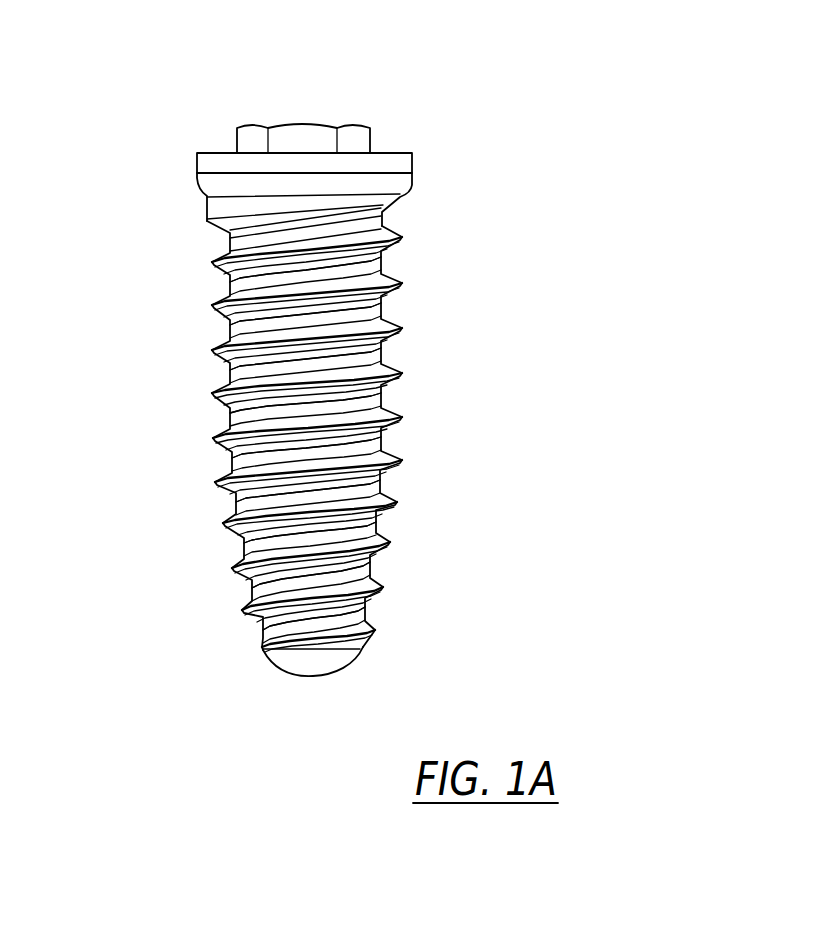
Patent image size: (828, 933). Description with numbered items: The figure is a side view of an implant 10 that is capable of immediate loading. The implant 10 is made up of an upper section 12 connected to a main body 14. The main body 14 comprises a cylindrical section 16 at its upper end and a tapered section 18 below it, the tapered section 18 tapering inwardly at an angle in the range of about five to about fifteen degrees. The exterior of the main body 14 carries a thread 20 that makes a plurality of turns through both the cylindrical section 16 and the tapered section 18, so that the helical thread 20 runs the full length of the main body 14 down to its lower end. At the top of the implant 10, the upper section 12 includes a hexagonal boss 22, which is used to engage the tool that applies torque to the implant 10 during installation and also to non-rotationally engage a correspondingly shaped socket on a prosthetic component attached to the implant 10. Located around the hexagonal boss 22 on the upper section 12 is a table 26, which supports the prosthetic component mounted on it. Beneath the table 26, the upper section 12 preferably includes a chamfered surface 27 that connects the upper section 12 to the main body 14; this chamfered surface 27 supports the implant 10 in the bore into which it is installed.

The implant 10 is at (590, 48).
The upper section 12 is at (146, 166).
The main body 14 is at (514, 370).
The cylindrical section 16 is at (385, 273).
The tapered section 18 is at (373, 525).
The thread 20 is at (223, 435).
The hexagonal boss 22 is at (367, 132).
The table 26 is at (212, 155).
The chamfered surface 27 is at (212, 185).